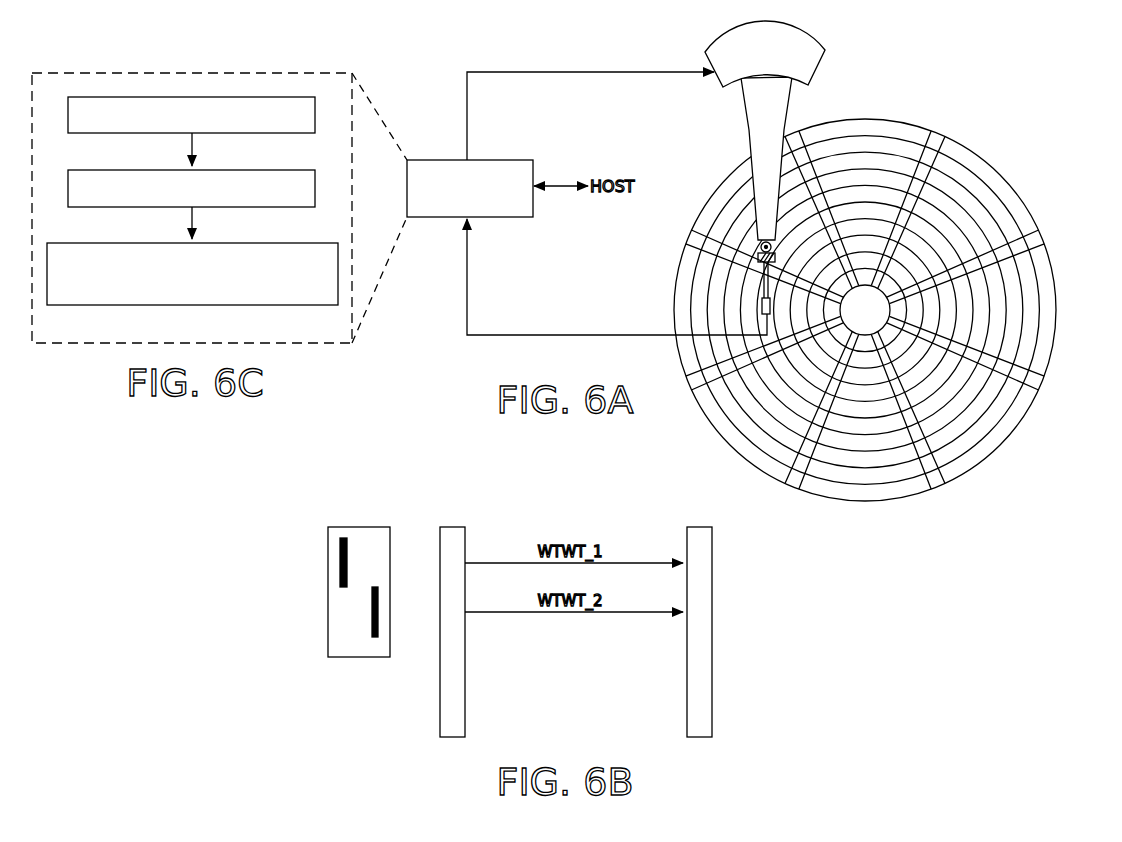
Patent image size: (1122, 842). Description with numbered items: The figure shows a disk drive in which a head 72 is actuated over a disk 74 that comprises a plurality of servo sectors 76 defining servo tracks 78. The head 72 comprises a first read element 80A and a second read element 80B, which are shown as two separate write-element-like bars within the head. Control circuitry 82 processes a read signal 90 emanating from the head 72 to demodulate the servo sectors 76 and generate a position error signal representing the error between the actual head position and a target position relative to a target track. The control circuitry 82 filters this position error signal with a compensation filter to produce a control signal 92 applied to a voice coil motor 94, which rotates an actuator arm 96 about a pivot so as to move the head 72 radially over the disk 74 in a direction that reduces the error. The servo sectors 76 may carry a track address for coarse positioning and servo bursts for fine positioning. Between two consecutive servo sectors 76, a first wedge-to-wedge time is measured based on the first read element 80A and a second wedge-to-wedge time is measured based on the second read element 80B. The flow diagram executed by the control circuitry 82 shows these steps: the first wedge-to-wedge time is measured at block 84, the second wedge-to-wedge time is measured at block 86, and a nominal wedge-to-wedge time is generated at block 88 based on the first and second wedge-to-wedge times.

In FIG. 6A, the head 72 is at (758, 306).
In FIG. 6B, the head 72 is at (329, 565).
In FIG. 6A, the disk 74 is at (1000, 166).
In FIG. 6A, the servo sectors 76 is at (929, 508).
In FIG. 6B, the servo sectors 76 is at (718, 753).
In FIG. 6A, the servo tracks 78 is at (852, 142).
In FIG. 6B, the first read element 80A is at (347, 572).
In FIG. 6B, the second read element 80B is at (372, 602).
In FIG. 6A, the control circuitry 82 is at (500, 160).
In FIG. 6C, the block measuring first wedge-to-wedge time 84 is at (283, 133).
In FIG. 6C, the block measuring second wedge-to-wedge time 86 is at (280, 207).
In FIG. 6C, the block generating nominal wedge-to-wedge time 88 is at (292, 305).
In FIG. 6A, the read signal 90 is at (600, 335).
In FIG. 6A, the control signal 92 is at (467, 102).
In FIG. 6A, the voice coil motor 94 is at (720, 84).
In FIG. 6A, the actuator arm 96 is at (750, 130).